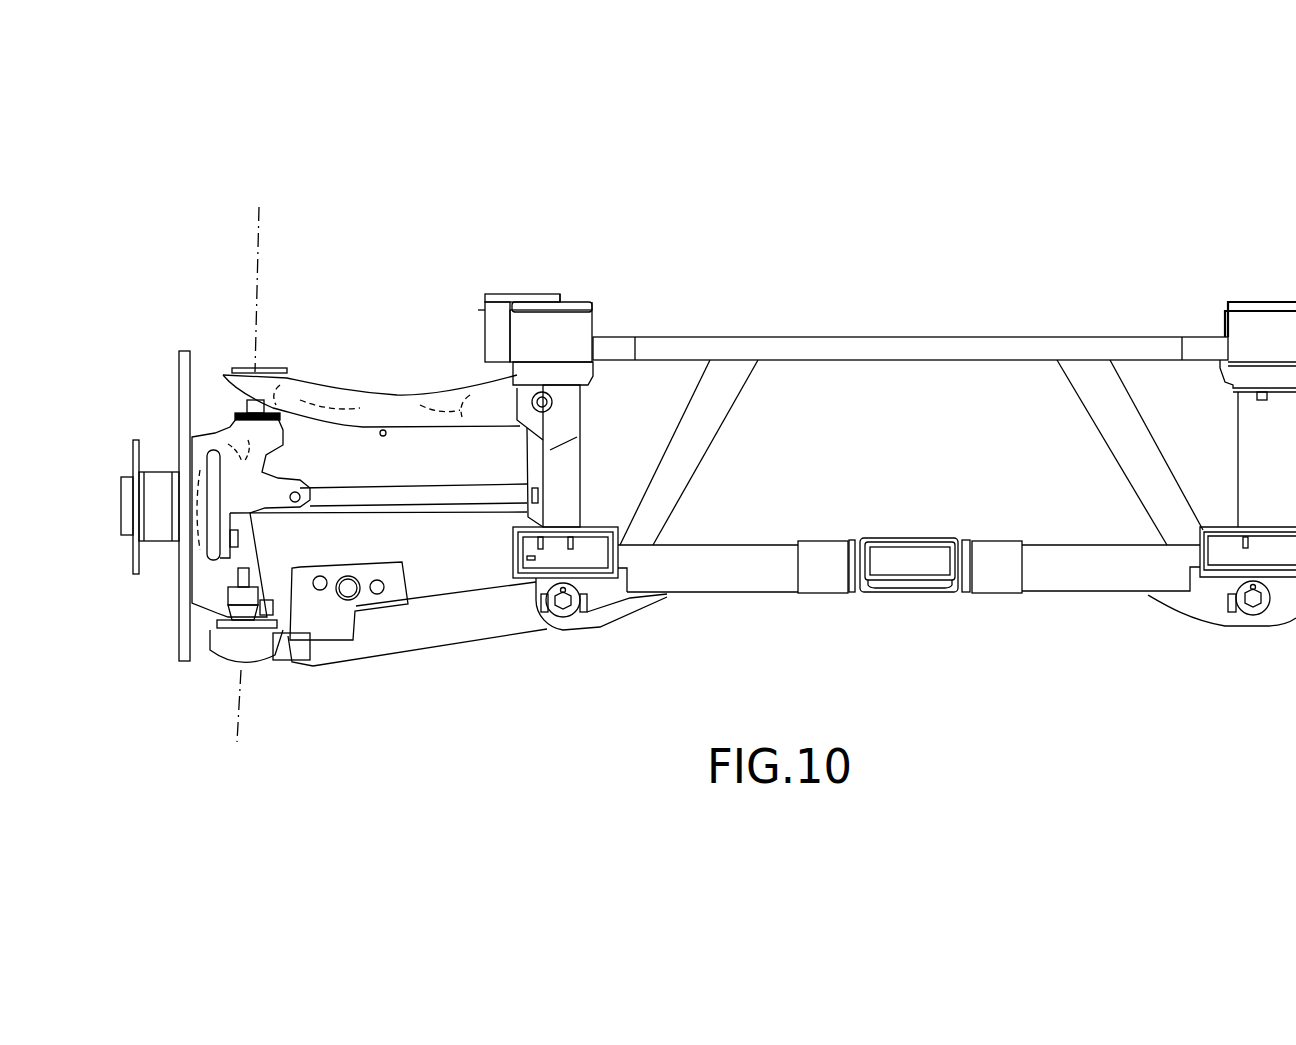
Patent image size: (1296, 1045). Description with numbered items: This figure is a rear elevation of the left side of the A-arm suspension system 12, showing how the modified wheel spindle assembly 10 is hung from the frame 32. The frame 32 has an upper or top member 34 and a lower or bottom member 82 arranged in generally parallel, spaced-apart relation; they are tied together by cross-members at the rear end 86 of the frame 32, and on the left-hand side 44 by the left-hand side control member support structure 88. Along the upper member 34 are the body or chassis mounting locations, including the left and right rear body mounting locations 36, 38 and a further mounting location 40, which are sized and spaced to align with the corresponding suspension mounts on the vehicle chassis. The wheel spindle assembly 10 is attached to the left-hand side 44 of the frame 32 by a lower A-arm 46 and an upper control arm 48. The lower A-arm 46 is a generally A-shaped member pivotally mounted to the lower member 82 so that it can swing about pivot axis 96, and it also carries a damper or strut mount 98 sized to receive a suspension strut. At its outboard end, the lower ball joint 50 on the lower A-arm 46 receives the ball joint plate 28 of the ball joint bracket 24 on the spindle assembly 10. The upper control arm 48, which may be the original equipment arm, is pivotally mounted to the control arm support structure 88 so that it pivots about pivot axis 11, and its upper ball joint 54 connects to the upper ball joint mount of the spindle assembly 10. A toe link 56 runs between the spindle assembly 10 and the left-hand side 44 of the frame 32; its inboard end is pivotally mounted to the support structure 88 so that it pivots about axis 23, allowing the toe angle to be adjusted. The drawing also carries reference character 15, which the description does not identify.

The wheel spindle assembly 10 is at (172, 338).
The pivot axis 11 is at (560, 405).
The A-arm suspension system 12 is at (866, 235).
The wheel axis 15 is at (258, 235).
The axis 23 is at (550, 488).
The ball joint bracket 24 is at (272, 543).
The ball joint plate 28 is at (266, 616).
The frame 32 is at (988, 320).
The upper member 34 is at (825, 337).
The left rear body mounting location 36 is at (595, 328).
The right rear body mounting location 38 is at (1242, 329).
The body mounting location 40 is at (493, 330).
The left-hand side of frame 44 is at (685, 340).
The lower A-arm 46 is at (398, 650).
The upper control arm 48 is at (428, 390).
The lower ball joint 50 is at (210, 640).
The upper ball joint 54 is at (245, 400).
The toe link 56 is at (390, 514).
The lower member 82 is at (1037, 593).
The rear end 86 is at (738, 594).
The left-hand side control member support structure 88 is at (582, 502).
The pivot axis 96 is at (565, 613).
The strut mount 98 is at (405, 585).